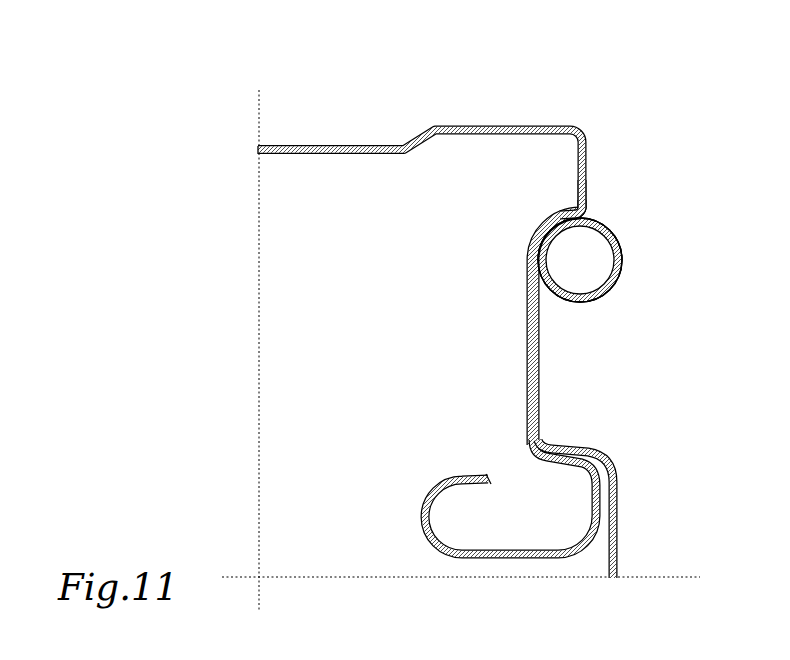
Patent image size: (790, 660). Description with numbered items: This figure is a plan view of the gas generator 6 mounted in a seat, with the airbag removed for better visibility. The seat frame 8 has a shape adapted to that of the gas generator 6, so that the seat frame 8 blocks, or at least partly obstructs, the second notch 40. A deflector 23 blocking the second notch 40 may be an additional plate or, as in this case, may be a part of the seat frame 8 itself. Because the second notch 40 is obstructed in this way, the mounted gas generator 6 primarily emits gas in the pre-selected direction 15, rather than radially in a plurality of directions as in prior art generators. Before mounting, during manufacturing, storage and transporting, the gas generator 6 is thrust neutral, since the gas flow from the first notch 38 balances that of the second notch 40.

The seat frame 8 is at (400, 127).
The pre-selected direction 15 is at (628, 362).
The gas generator 6 is at (590, 273).
The first notch 38 is at (606, 292).
The second notch 40 is at (550, 234).
The deflector 23 is at (566, 207).